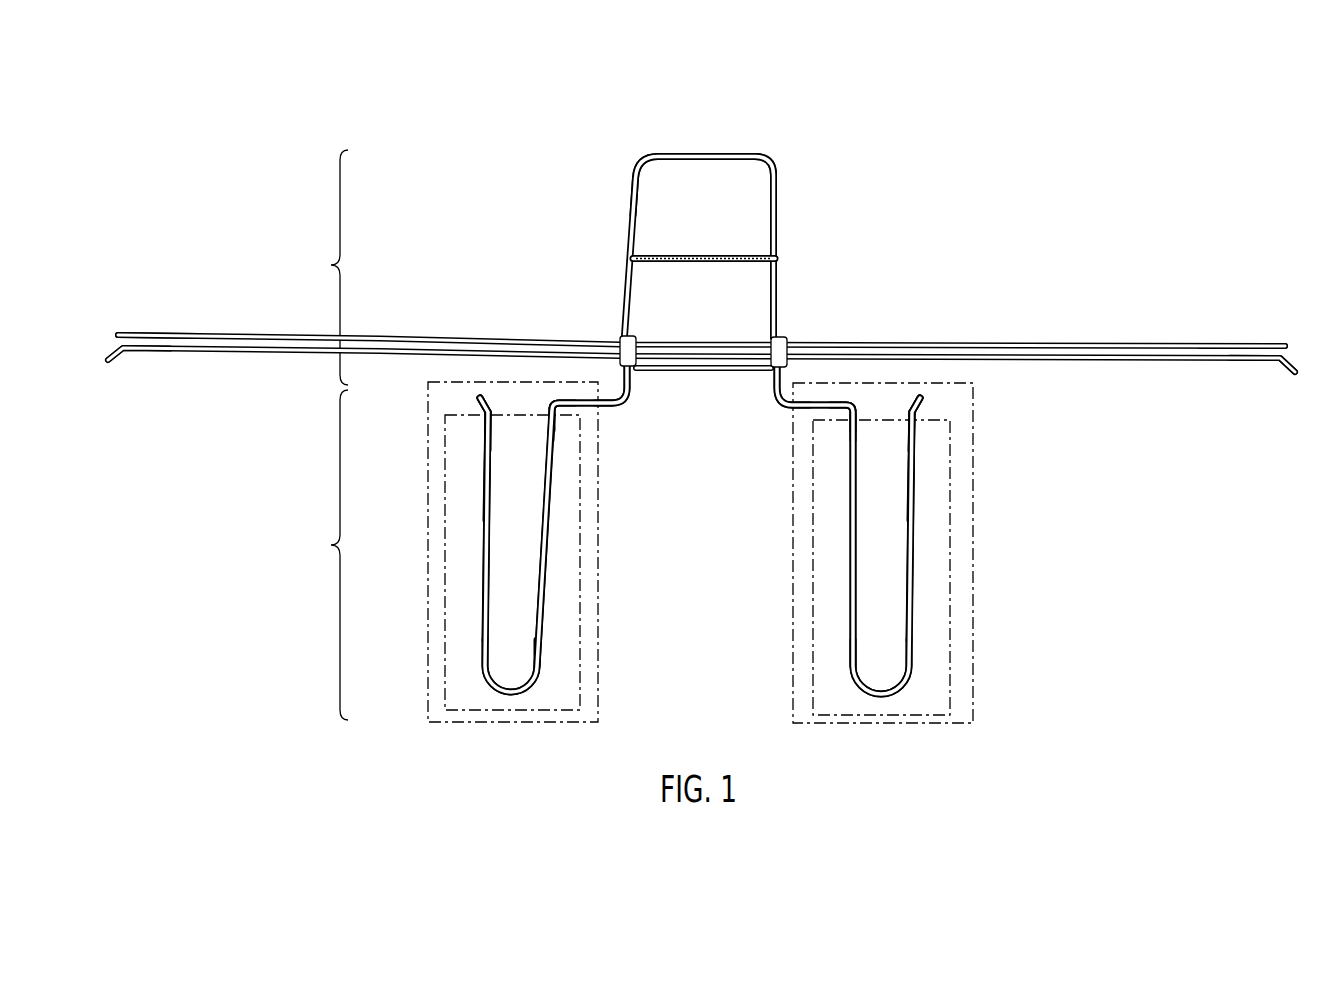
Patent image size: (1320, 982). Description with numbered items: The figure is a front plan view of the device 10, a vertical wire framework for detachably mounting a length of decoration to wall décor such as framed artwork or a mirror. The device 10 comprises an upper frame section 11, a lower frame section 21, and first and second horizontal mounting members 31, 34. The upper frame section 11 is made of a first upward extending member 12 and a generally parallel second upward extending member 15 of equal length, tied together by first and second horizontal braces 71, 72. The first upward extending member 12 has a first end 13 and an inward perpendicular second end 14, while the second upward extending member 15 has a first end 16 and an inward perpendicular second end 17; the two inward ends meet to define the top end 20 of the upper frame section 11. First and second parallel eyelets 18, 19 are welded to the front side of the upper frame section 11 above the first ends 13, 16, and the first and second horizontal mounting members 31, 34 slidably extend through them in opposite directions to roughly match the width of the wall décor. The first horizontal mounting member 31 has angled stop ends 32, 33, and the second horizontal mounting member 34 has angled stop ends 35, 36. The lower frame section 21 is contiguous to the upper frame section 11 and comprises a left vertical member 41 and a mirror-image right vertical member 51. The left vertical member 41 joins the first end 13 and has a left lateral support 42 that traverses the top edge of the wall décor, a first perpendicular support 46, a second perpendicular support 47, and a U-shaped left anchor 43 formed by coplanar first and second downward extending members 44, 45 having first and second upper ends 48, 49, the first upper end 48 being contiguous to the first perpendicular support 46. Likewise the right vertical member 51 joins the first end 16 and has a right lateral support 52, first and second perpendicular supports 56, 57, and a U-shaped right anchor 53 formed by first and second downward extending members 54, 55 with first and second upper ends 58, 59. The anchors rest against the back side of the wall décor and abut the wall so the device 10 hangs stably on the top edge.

The device 10 is at (333, 106).
The upper frame section 11 is at (326, 267).
The first upward extending member 12 is at (627, 270).
The first end 13 is at (628, 396).
The inward perpendicular second end 14 is at (640, 155).
The second upward extending member 15 is at (778, 272).
The first end 16 is at (776, 396).
The inward perpendicular second end 17 is at (777, 160).
The first parallel eyelet 18 is at (612, 344).
The second parallel eyelet 19 is at (795, 346).
The top end 20 is at (708, 153).
The lower frame section 21 is at (321, 555).
The first horizontal mounting member 31 is at (292, 336).
The angled stop end 32 is at (128, 332).
The angled stop end 33 is at (1278, 342).
The second horizontal mounting member 34 is at (295, 354).
The angled stop end 35 is at (111, 362).
The angled stop end 36 is at (1286, 368).
The left vertical member 41 is at (428, 560).
The left lateral support 42 is at (575, 408).
The left anchor 43 is at (580, 667).
The first downward extending member 44 is at (548, 570).
The second downward extending member 45 is at (484, 555).
The first perpendicular support 46 is at (560, 421).
The second perpendicular support 47 is at (474, 398).
The first upper end 48 is at (490, 462).
The second upper end 49 is at (488, 420).
The right vertical member 51 is at (975, 545).
The right lateral support 52 is at (810, 412).
The right anchor 53 is at (812, 680).
The first downward extending member 54 is at (850, 505).
The second downward extending member 55 is at (915, 590).
The first perpendicular support 56 is at (845, 424).
The second perpendicular support 57 is at (926, 410).
The first upper end 58 is at (912, 470).
The second upper end 59 is at (938, 418).
The first horizontal brace 71 is at (748, 372).
The second horizontal brace 72 is at (729, 252).